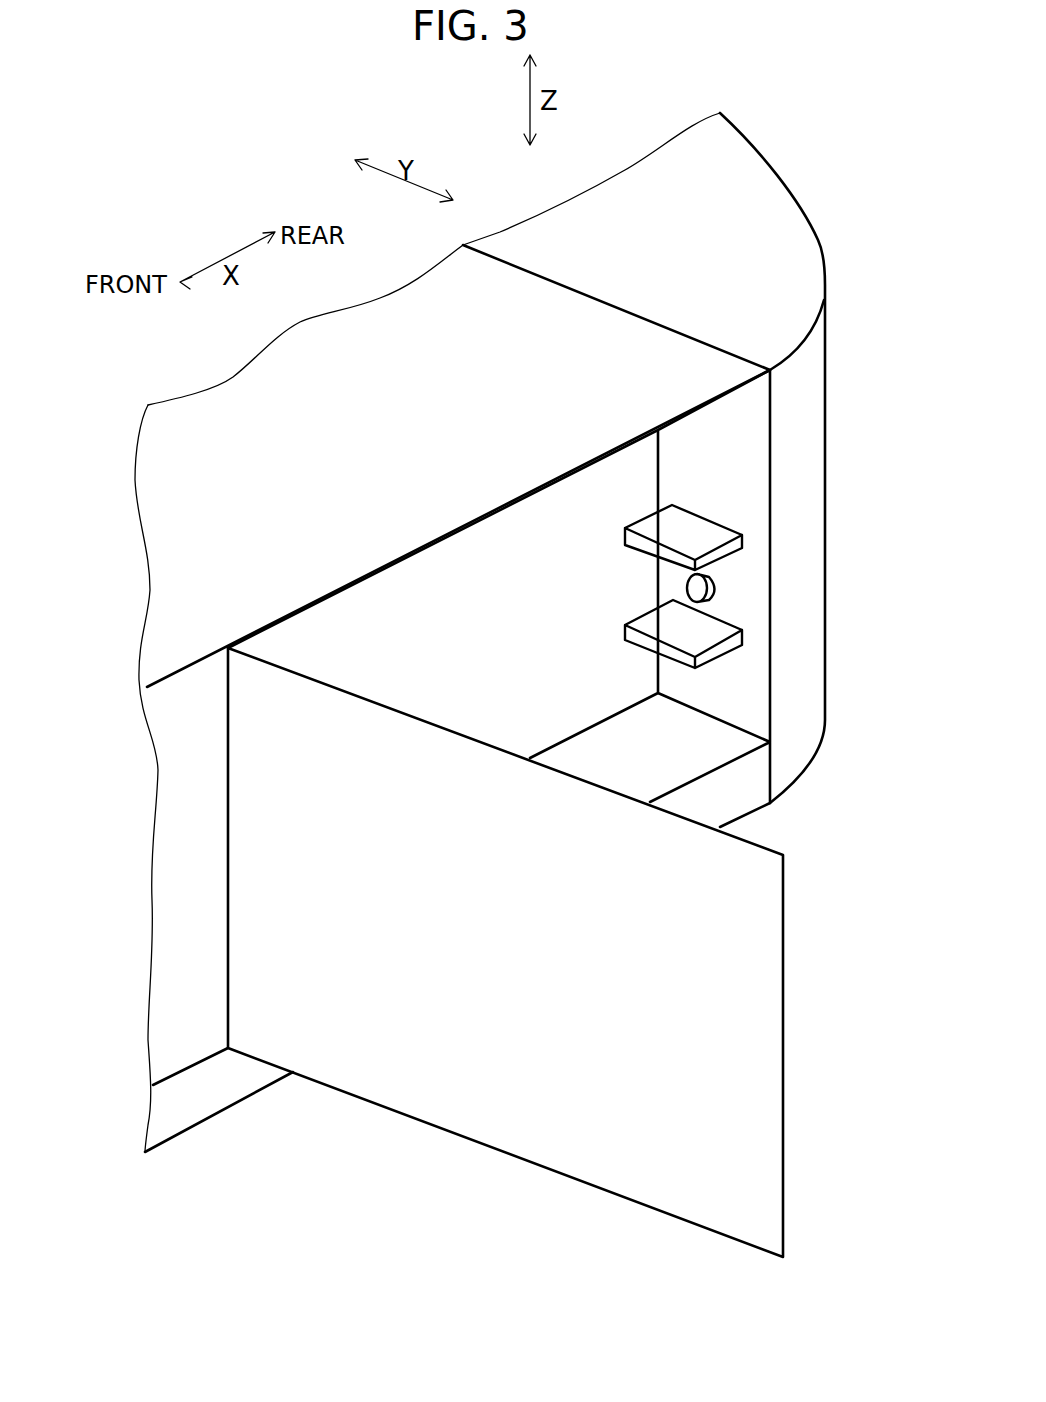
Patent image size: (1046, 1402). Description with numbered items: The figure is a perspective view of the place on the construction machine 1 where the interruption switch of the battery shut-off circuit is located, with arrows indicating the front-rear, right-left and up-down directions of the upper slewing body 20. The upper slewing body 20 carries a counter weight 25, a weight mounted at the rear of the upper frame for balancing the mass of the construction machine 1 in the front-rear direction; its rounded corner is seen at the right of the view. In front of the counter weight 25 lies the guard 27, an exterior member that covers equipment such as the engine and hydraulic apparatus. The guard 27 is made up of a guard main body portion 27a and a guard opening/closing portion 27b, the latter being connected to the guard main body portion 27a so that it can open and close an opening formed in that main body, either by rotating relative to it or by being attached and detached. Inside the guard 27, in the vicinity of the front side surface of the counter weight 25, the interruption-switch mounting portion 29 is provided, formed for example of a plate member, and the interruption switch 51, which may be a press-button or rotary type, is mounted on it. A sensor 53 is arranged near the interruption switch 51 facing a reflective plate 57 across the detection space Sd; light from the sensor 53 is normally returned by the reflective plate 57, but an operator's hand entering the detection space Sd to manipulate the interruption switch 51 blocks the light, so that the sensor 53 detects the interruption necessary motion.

The construction machine 1 is at (463, 668).
The upper slewing body 20 is at (229, 132).
The counter weight 25 is at (797, 245).
The guard 27 is at (53, 648).
The guard main body portion 27a is at (175, 640).
The guard opening/closing portion 27b is at (250, 742).
The interruption-switch mounting portion 29 is at (750, 478).
The interruption switch 51 is at (717, 590).
The sensor 53 is at (720, 552).
The reflective plate 57 is at (723, 648).
The detection space Sd is at (750, 619).